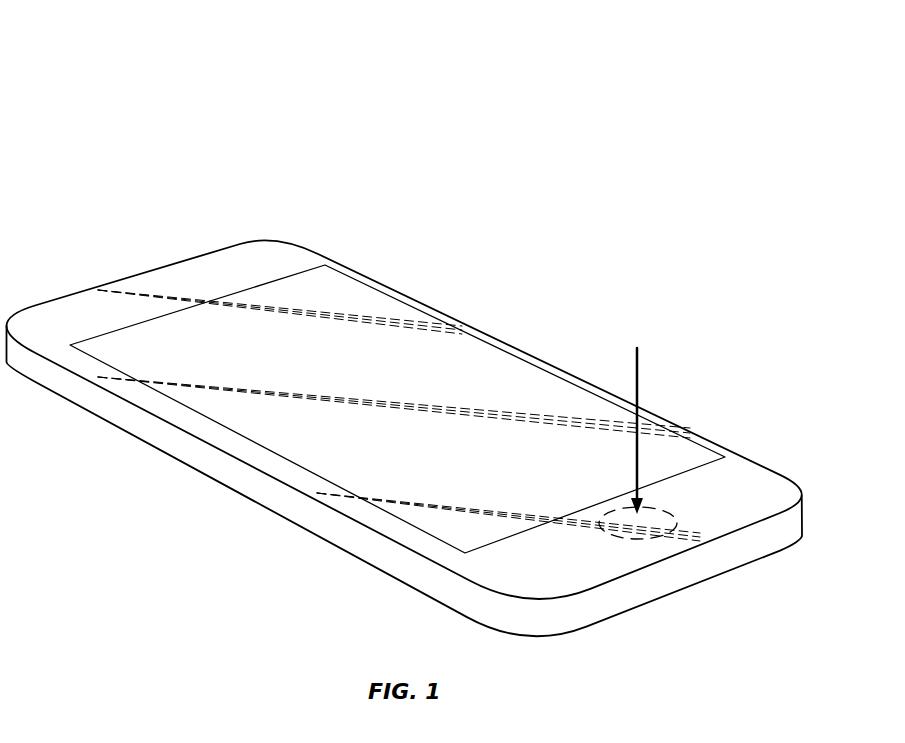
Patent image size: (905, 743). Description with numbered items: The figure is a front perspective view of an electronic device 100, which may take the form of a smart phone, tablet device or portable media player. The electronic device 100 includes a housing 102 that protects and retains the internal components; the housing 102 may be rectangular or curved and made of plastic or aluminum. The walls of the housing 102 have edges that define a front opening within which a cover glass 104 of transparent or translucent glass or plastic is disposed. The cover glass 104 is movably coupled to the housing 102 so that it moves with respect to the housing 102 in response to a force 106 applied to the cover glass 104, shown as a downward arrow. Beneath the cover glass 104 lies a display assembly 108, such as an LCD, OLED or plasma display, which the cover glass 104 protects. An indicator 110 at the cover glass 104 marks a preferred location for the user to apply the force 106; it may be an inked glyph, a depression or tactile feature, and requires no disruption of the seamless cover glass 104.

The electronic device 100 is at (50, 104).
The housing 102 is at (757, 545).
The cover glass 104 is at (267, 246).
The force 106 is at (637, 370).
The display assembly 108 is at (377, 307).
The indicator 110 is at (650, 542).